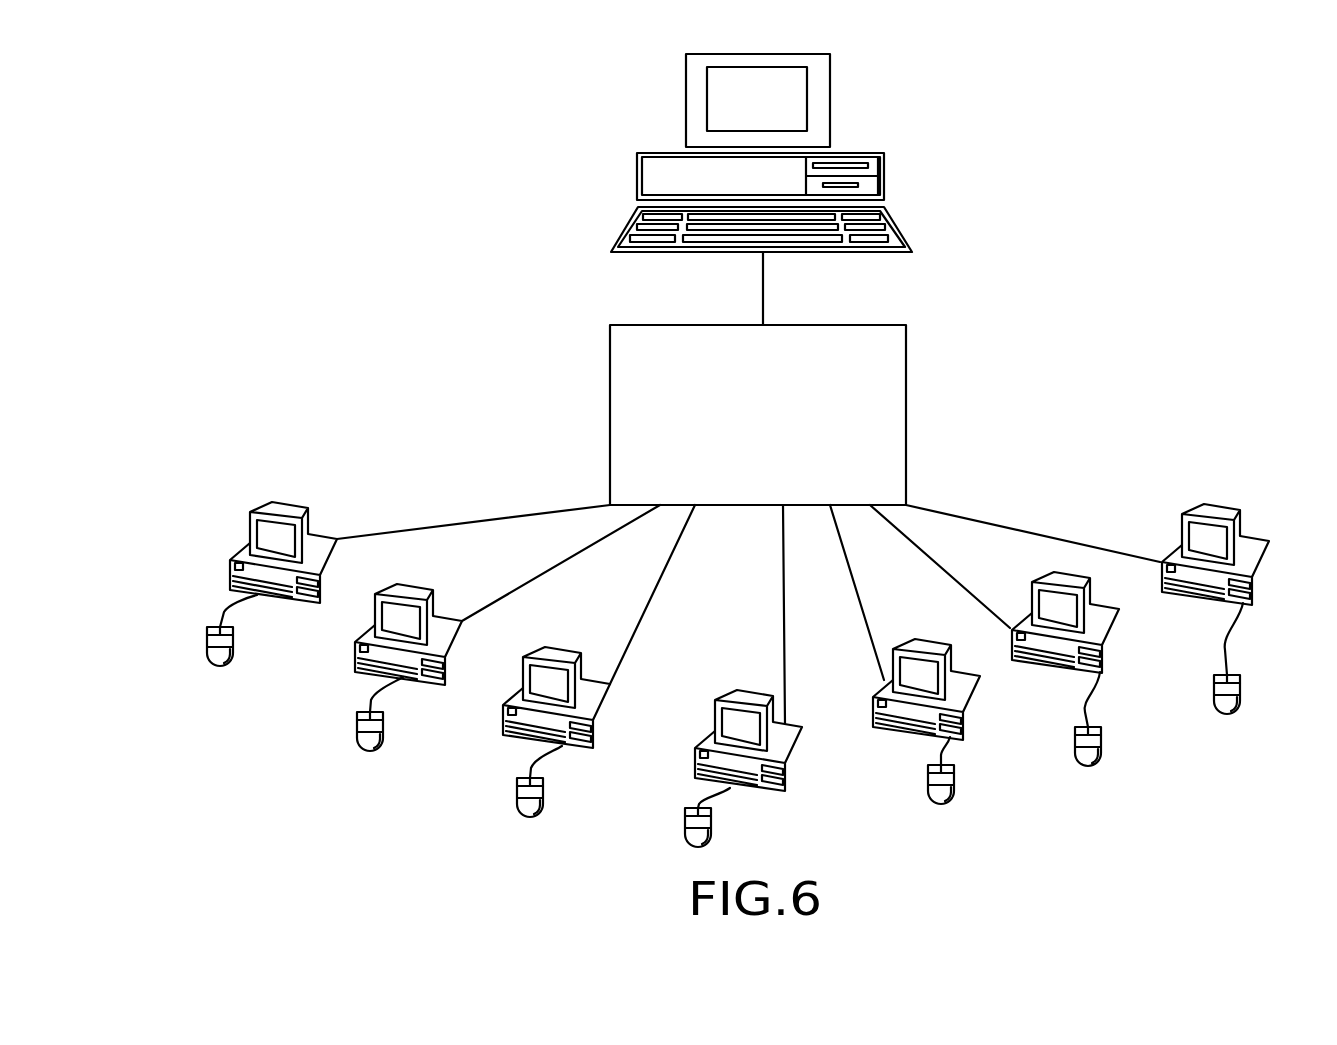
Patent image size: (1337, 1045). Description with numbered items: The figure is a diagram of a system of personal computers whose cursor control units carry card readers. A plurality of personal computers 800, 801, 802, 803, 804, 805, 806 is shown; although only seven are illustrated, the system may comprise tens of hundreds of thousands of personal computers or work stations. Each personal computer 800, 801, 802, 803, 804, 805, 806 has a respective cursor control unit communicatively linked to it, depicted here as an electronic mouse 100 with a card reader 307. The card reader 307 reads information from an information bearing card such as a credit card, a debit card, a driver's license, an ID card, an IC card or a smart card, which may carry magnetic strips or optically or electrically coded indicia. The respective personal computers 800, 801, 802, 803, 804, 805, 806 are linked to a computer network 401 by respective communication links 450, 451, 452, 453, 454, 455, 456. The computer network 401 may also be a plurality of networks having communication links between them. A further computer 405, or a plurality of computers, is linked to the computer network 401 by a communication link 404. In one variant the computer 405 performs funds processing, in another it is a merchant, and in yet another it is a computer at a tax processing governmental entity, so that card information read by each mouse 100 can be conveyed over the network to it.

The computer 405 is at (885, 166).
The communication link 404 is at (763, 287).
The computer network 401 is at (906, 430).
The communication link 456 is at (484, 521).
The communication link 455 is at (546, 570).
The communication link 454 is at (646, 606).
The communication link 453 is at (783, 618).
The communication link 452 is at (862, 605).
The communication link 451 is at (944, 570).
The communication link 450 is at (1037, 533).
The personal computer 806 is at (322, 575).
The personal computer 805 is at (447, 655).
The personal computer 804 is at (595, 716).
The personal computer 803 is at (787, 758).
The personal computer 802 is at (965, 708).
The personal computer 801 is at (1104, 641).
The personal computer 800 is at (1255, 572).
The electronic mouse 100 is at (229, 660).
The card reader 307 is at (233, 640).